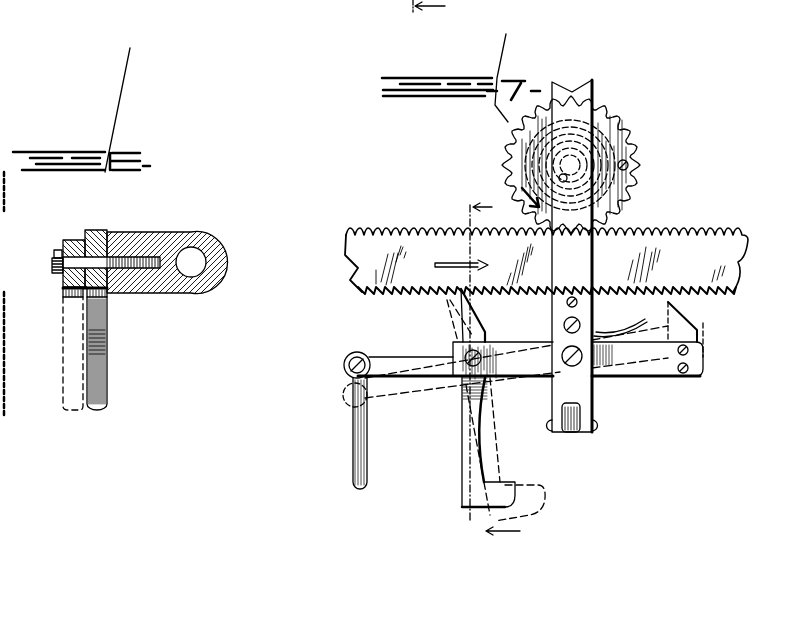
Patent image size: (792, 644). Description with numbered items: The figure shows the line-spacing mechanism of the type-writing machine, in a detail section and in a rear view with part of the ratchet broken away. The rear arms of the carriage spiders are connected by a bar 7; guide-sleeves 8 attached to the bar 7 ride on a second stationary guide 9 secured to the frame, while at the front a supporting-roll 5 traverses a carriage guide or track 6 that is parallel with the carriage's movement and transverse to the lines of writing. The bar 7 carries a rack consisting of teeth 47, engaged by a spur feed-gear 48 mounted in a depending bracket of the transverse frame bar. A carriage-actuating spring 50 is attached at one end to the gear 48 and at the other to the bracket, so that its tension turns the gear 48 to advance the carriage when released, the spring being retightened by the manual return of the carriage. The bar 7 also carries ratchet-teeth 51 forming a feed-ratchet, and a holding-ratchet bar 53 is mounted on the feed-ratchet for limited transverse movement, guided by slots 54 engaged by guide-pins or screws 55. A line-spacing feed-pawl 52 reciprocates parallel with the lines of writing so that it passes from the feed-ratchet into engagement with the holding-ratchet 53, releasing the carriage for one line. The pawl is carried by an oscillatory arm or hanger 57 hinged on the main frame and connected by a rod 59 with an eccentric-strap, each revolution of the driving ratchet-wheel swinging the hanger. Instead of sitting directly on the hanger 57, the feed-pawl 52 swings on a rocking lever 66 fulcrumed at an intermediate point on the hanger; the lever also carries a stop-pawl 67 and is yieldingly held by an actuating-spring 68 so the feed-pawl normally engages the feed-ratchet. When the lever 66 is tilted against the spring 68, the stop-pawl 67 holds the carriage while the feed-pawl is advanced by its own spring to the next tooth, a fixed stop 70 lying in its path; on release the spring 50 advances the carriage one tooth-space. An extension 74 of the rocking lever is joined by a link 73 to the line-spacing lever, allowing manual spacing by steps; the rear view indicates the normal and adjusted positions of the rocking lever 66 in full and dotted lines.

In FIG. 6, the supporting-roll 5 is at (108, 297).
In FIG. 7, the carriage guide or track 6 is at (425, 15).
In FIG. 6, the bar 7 is at (110, 240).
In FIG. 7, the bar 7 is at (399, 249).
In FIG. 6, the guide-sleeves 8 is at (210, 248).
In FIG. 7, the guide-sleeves 8 is at (493, 365).
In FIG. 6, the second stationary guide 9 is at (214, 282).
In FIG. 6, the rack teeth 47 is at (97, 231).
In FIG. 7, the rack teeth 47 is at (684, 229).
In FIG. 7, the spur feed-gear 48 is at (639, 172).
In FIG. 7, the carriage-actuating spring 50 is at (540, 170).
In FIG. 7, the ratchet-teeth 51 is at (376, 293).
In FIG. 6, the line-spacing feed-pawl 52 is at (106, 335).
In FIG. 7, the line-spacing feed-pawl 52 is at (463, 325).
In FIG. 6, the holding-ratchet 53 is at (74, 240).
In FIG. 6, the slots 54 is at (56, 250).
In FIG. 6, the guide-pins or screws 55 is at (53, 266).
In FIG. 7, the oscillatory arm or hanger 57 is at (566, 318).
In FIG. 7, the rod 59 is at (580, 431).
In FIG. 7, the rocking lever 66 is at (533, 368).
In FIG. 7, the stop-pawl 67 is at (680, 323).
In FIG. 7, the actuating-spring 68 is at (616, 334).
In FIG. 7, the fixed stop 70 is at (488, 350).
In FIG. 7, the link 73 is at (353, 430).
In FIG. 7, the extension 74 is at (387, 357).